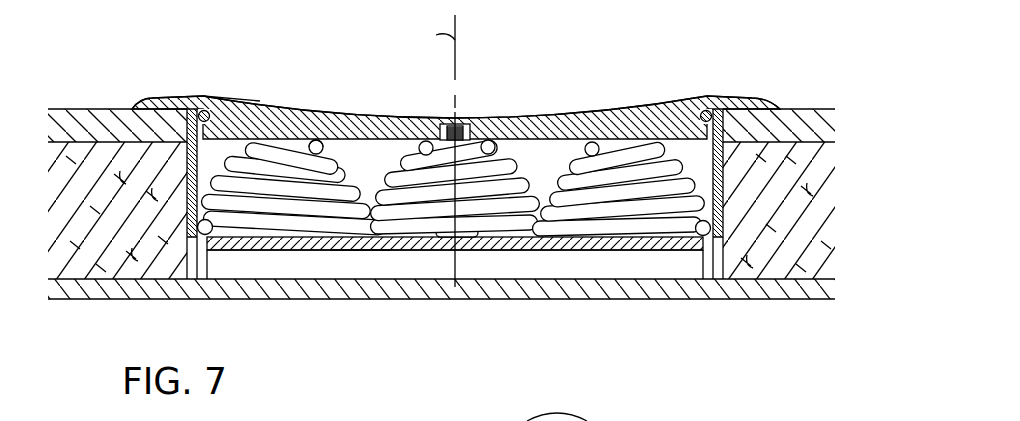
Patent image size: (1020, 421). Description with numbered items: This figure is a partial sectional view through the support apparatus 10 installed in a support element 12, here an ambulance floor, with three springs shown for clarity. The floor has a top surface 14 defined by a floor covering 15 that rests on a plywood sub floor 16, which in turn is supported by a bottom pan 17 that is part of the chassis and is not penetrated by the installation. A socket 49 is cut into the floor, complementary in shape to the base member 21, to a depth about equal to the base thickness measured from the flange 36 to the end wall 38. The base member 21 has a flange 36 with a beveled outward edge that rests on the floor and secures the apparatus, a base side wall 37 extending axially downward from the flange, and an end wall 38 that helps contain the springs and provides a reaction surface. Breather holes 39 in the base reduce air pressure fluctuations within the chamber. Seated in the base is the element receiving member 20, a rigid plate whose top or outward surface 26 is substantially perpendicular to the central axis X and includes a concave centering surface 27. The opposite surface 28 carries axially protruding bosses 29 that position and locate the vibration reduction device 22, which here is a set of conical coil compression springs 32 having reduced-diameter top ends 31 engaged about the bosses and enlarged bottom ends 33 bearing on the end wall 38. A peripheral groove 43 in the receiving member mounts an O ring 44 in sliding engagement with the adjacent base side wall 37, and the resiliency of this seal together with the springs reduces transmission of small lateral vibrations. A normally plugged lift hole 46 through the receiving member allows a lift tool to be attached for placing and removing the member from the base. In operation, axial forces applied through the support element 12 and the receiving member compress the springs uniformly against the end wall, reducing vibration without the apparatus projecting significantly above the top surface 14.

The support apparatus 10 is at (690, 64).
The support element 12 is at (810, 101).
The top surface 14 is at (823, 111).
The floor covering 15 is at (108, 112).
The sub floor 16 is at (100, 227).
The bottom pan 17 is at (574, 298).
The element receiving member 20 is at (356, 97).
The base member 21 is at (350, 264).
The vibration reduction device 22 is at (361, 183).
The outward surface 26 is at (198, 161).
The concave centering surface 27 is at (377, 112).
The surface 28 is at (186, 171).
The bosses 29 is at (292, 138).
The top ends 31 is at (318, 140).
The conical coil compression springs 32 is at (485, 142).
The bottom ends 33 is at (455, 258).
The flange 36 is at (168, 98).
The base side wall 37 is at (724, 188).
The end wall 38 is at (386, 248).
The breather holes 39 is at (200, 236).
The peripheral groove 43 is at (205, 110).
The O ring 44 is at (226, 112).
The lift hole 46 is at (458, 123).
The socket 49 is at (490, 266).